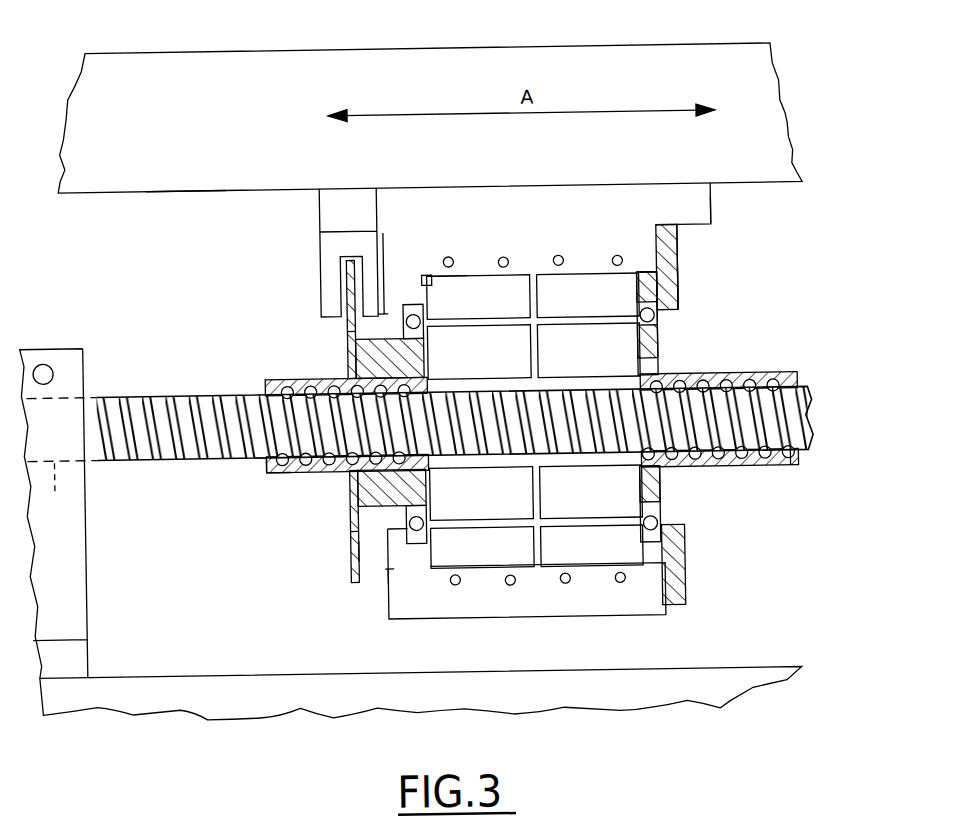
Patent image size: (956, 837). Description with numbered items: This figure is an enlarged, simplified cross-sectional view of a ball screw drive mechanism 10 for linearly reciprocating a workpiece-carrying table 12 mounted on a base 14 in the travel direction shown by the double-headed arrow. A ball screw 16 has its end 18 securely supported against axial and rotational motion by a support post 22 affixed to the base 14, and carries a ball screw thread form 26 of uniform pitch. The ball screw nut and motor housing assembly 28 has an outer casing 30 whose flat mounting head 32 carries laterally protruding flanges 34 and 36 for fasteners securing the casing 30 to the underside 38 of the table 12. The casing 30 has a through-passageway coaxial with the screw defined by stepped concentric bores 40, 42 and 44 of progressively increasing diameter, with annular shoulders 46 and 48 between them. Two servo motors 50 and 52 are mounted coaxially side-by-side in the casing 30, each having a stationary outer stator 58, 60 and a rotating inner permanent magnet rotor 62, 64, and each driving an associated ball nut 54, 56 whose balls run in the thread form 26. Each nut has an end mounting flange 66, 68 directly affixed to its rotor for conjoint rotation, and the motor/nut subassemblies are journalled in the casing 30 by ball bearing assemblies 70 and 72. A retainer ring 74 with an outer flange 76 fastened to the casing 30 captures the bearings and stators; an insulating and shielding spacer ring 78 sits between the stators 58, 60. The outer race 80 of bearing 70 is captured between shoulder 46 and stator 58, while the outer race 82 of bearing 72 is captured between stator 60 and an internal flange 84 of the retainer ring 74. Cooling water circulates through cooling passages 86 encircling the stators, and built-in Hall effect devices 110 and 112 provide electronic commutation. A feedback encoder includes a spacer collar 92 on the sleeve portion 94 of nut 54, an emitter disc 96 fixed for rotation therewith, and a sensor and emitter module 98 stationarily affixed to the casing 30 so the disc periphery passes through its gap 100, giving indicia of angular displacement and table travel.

The ball screw drive mechanism 10 is at (411, 548).
The workpiece-carrying table 12 is at (184, 48).
The base 14 is at (338, 718).
The ball screw 16 is at (454, 411).
The end of ball screw 18 is at (62, 463).
The support post 22 is at (86, 579).
The ball screw thread form 26 is at (180, 458).
The ball screw nut and motor housing assembly 28 is at (308, 235).
The outer casing 30 is at (683, 254).
The flat mounting head 32 is at (441, 398).
The flange 34 is at (323, 219).
The flange 36 is at (714, 195).
The underside of table 38 is at (190, 188).
The cylindrical bore 40 is at (390, 313).
The cylindrical bore 42 is at (422, 303).
The cylindrical bore 44 is at (563, 270).
The annular shoulder 46 is at (404, 302).
The annular shoulder 48 is at (458, 262).
The servo motor 50 is at (548, 273).
The servo motor 52 is at (558, 429).
The ball nut 54 is at (285, 505).
The ball nut 56 is at (789, 472).
The stator 58 is at (523, 273).
The stator 60 is at (628, 268).
The rotor 62 is at (357, 487).
The rotor 64 is at (702, 384).
The end mounting flange 66 is at (363, 545).
The end mounting flange 68 is at (660, 359).
The ball bearing assembly 70 is at (349, 332).
The ball bearing assembly 72 is at (661, 332).
The retainer ring 74 is at (689, 279).
The outer flange 76 is at (686, 228).
The spacer ring 78 is at (564, 258).
The outer race 80 is at (475, 258).
The outer race 82 is at (665, 286).
The internal flange 84 is at (670, 318).
The cooling passages 86 is at (473, 267).
The spacer collar 92 is at (348, 534).
The sleeve portion 94 is at (289, 468).
The emitter disc 96 is at (348, 569).
The sensor and emitter module 98 is at (301, 309).
The gap 100 is at (349, 288).
The Hall effect device 110 is at (442, 275).
The Hall effect device 112 is at (613, 260).